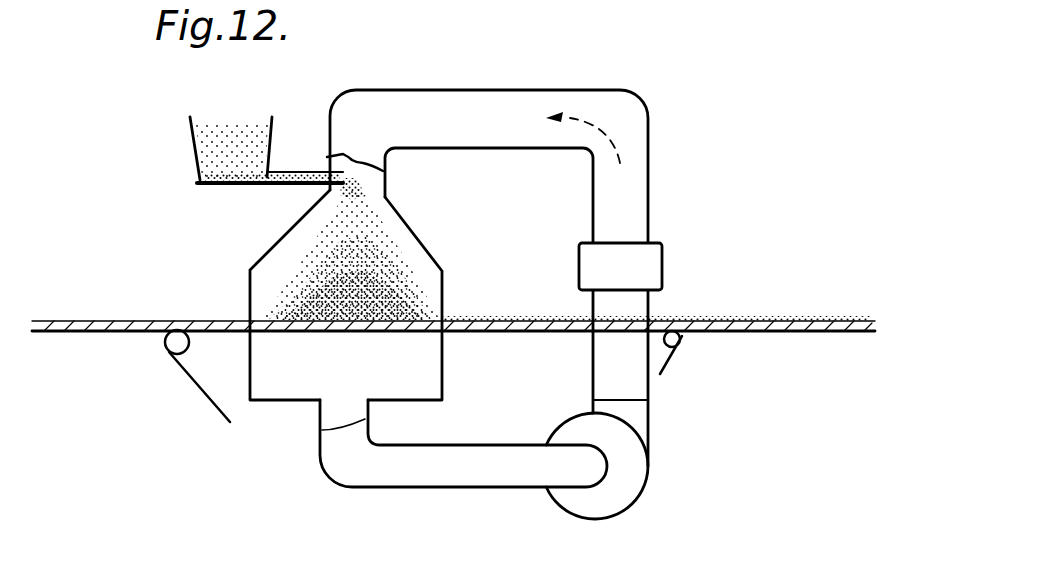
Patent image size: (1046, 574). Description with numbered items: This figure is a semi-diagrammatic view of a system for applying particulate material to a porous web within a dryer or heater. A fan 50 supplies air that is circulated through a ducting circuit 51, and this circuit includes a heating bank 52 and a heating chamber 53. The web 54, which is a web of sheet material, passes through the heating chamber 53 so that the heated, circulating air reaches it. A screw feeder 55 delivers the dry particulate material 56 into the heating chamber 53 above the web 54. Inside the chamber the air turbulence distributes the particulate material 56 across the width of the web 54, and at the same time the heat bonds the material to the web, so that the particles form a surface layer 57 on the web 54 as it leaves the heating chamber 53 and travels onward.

The fan 50 is at (635, 448).
The ducting circuit 51 is at (637, 175).
The heating bank 52 is at (657, 262).
The heating chamber 53 is at (397, 240).
The web 54 is at (137, 305).
The screw feeder 55 is at (195, 163).
The particulate material 56 is at (232, 128).
The surface layer 57 is at (703, 322).